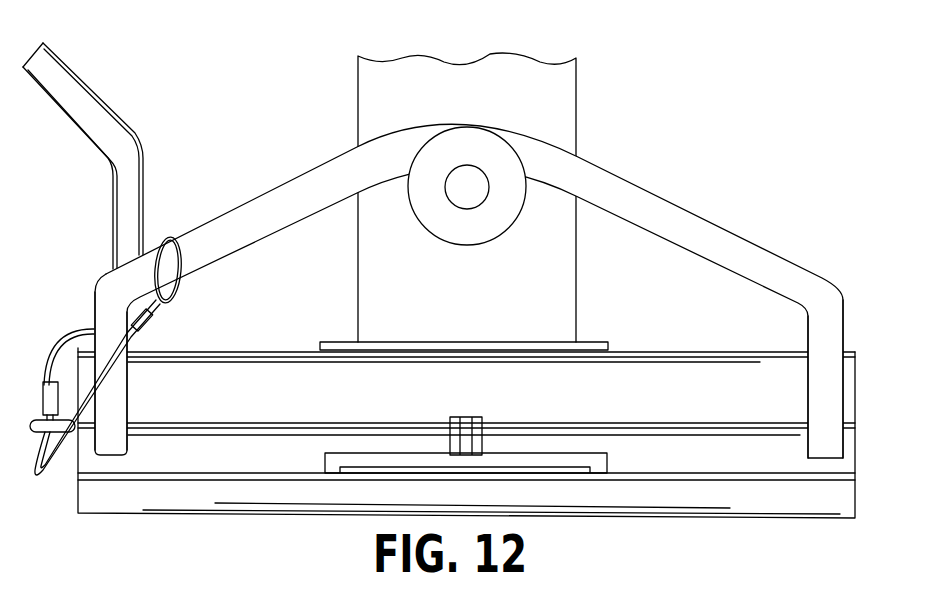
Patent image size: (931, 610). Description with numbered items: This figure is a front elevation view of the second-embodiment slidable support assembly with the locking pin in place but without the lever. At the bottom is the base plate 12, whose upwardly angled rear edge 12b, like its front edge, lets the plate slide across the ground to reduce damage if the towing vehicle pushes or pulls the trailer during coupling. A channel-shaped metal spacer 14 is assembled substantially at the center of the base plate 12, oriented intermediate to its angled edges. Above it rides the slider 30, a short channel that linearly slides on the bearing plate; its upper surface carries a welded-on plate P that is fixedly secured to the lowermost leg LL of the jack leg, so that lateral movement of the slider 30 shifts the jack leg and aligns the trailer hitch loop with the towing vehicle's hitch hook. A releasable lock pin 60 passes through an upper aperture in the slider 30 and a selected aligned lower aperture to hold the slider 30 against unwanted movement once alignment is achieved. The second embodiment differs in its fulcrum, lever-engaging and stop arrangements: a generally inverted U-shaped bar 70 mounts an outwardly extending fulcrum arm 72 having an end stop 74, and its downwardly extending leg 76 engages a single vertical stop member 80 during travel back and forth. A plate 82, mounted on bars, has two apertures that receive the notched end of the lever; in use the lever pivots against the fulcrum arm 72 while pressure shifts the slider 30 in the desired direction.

The base plate 12 is at (729, 519).
The rear edge 12b is at (163, 487).
The spacer 14 is at (768, 467).
The slider 30 is at (673, 342).
The releasable lock pin 60 is at (117, 130).
The inverted U-shaped bar 70 is at (808, 406).
The fulcrum arm 72 is at (482, 150).
The end stop 74 is at (500, 215).
The leg 76 is at (128, 385).
The vertical stop member 80 is at (451, 418).
The plate 82 is at (600, 455).
The plate P is at (600, 342).
The lowermost leg LL is at (574, 113).